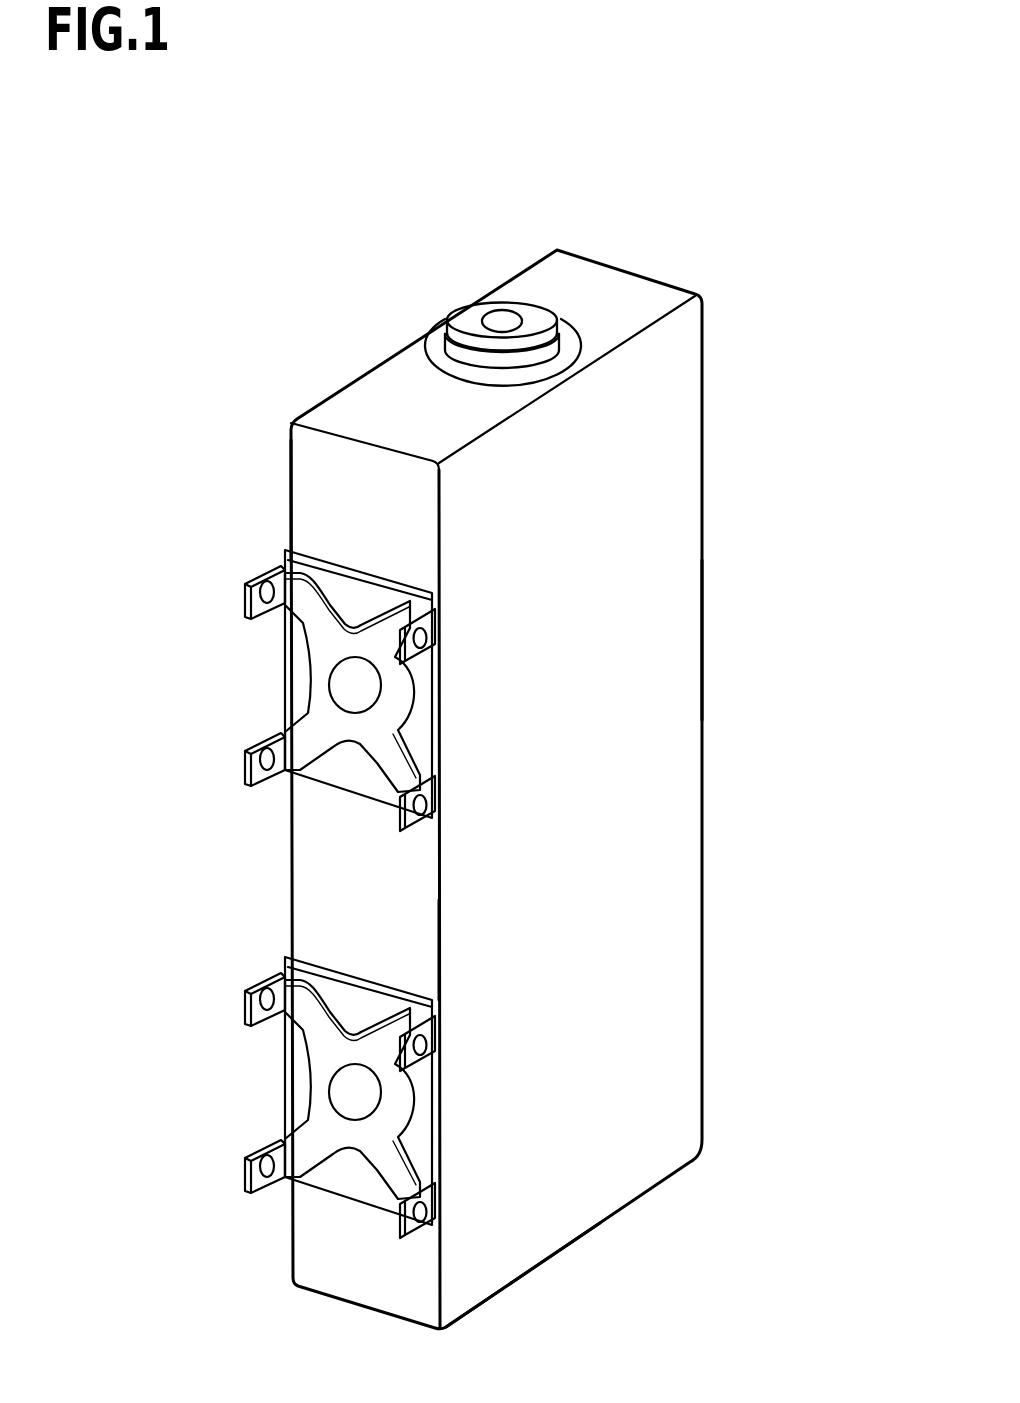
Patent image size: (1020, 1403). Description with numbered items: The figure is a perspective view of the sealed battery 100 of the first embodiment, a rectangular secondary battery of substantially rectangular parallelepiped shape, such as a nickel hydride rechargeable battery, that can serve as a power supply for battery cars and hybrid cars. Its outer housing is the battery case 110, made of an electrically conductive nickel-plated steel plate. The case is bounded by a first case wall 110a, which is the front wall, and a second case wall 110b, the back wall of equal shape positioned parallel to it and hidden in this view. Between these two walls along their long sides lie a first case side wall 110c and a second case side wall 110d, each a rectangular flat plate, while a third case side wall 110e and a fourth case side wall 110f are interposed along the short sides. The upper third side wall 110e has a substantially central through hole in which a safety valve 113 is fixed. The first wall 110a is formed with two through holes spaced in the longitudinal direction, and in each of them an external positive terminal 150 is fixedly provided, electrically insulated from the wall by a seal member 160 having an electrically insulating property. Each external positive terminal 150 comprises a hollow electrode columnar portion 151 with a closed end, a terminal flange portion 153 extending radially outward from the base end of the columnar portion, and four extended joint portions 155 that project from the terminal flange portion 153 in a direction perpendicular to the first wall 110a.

The sealed battery 100 is at (708, 207).
The battery case 110 is at (680, 793).
The first case wall 110a is at (340, 1265).
The second case wall 110b is at (703, 640).
The first case side wall 110c is at (657, 1023).
The second case side wall 110d is at (283, 492).
The third case side wall 110e is at (365, 412).
The fourth case side wall 110f is at (535, 1273).
The safety valve 113 is at (502, 311).
The external positive terminal 150 is at (315, 678).
The electrode columnar portion 151 is at (338, 1082).
The terminal flange portion 153 is at (316, 1138).
The extended joint portion 155 is at (250, 1168).
The seal member 160 is at (342, 785).